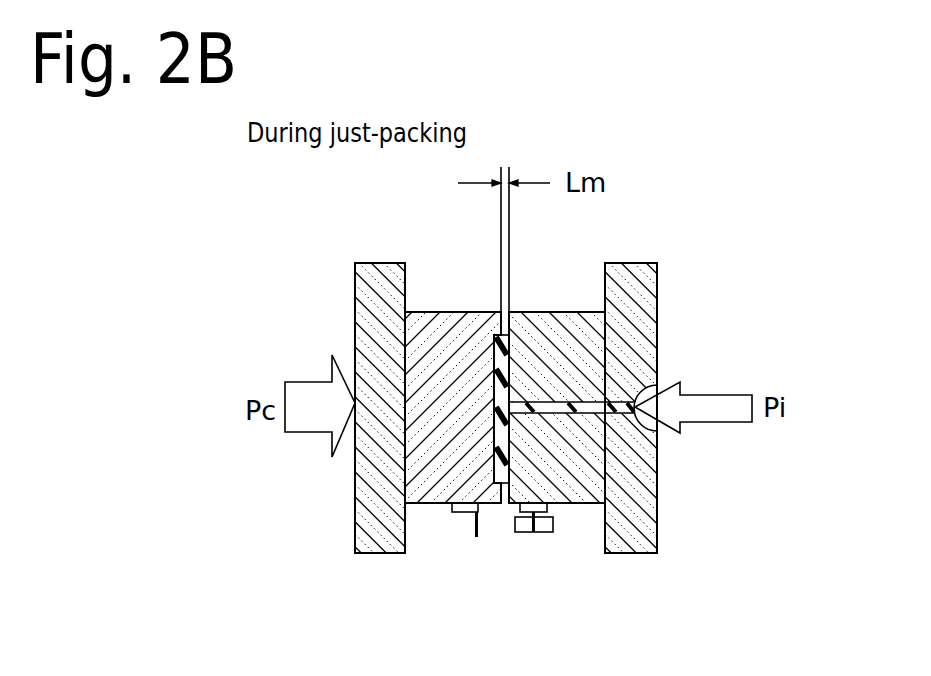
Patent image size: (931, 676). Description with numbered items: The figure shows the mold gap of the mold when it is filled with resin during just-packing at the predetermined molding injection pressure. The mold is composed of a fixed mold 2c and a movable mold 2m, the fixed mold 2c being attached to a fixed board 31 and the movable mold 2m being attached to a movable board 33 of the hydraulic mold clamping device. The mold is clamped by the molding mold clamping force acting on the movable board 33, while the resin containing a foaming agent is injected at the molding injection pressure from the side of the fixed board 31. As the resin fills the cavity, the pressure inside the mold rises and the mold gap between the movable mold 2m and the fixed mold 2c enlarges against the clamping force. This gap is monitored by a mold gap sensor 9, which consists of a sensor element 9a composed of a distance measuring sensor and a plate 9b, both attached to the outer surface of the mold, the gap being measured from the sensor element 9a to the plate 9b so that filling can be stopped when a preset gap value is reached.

The movable board 33 is at (355, 317).
The fixed board 31 is at (658, 302).
The movable mold 2m is at (440, 310).
The fixed mold 2c is at (545, 309).
The mold gap sensor 9 is at (492, 568).
The sensor element 9a is at (531, 545).
The plate 9b is at (470, 525).